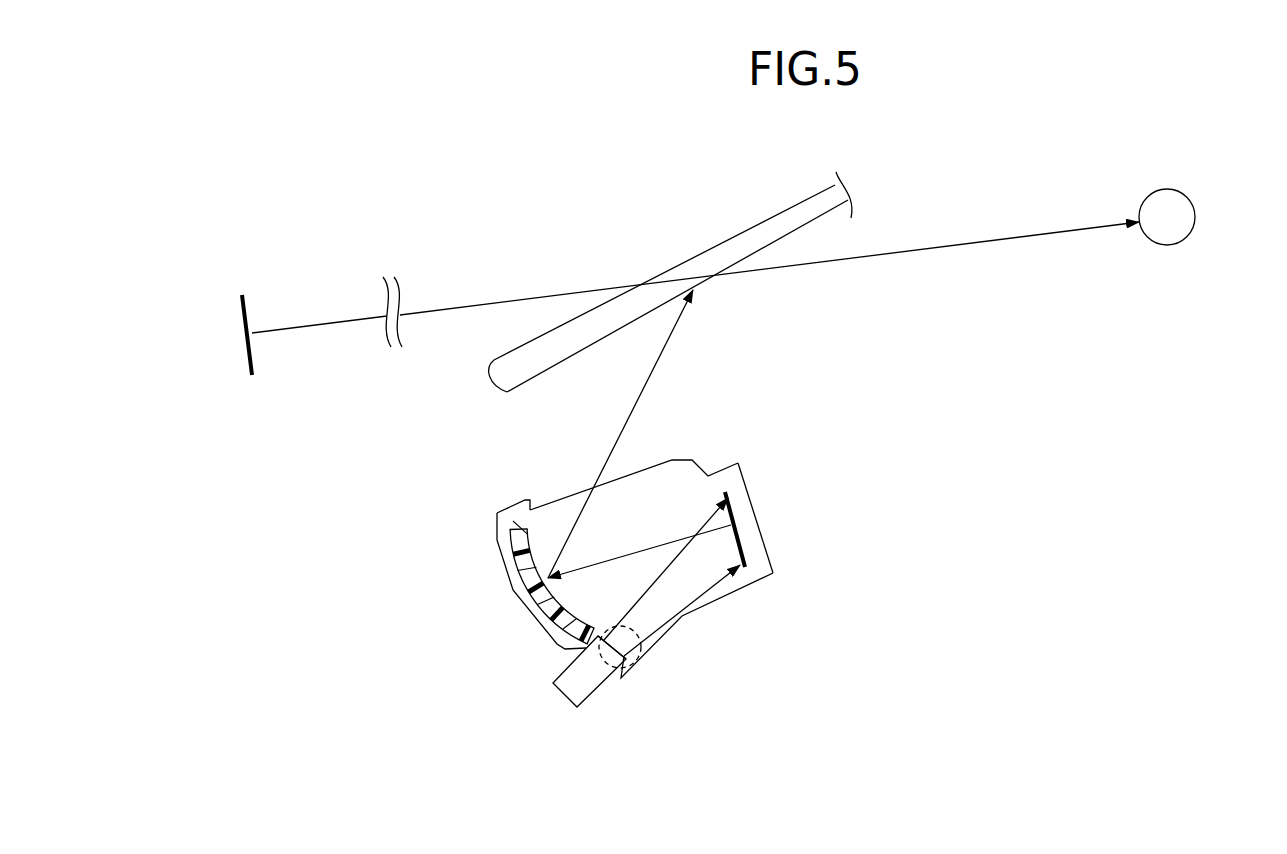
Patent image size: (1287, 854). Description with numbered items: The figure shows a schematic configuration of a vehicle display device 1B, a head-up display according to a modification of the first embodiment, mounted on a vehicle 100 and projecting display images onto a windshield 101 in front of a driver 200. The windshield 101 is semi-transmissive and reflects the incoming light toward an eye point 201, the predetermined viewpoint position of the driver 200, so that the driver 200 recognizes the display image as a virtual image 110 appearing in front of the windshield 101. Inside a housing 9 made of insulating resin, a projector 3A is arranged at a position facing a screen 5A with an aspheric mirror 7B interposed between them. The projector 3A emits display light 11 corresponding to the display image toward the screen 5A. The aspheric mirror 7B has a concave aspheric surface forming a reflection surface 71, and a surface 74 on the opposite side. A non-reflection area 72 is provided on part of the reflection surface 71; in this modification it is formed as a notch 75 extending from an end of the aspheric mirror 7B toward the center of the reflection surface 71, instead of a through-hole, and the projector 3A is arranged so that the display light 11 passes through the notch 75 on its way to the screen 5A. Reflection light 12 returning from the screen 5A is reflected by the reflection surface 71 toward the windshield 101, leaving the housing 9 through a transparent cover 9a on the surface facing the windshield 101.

The vehicle 100 is at (643, 173).
The windshield 101 is at (780, 187).
The virtual image 110 is at (249, 300).
The driver 200 is at (1183, 196).
The eye point 201 is at (1140, 203).
The vehicle display device 1B is at (790, 427).
The display light 11 is at (631, 531).
The reflection light 12 is at (617, 556).
The screen 5A is at (732, 512).
The housing 9 is at (686, 622).
The transparent cover 9a is at (572, 497).
The aspheric mirror 7B is at (507, 549).
The reflection surface 71 is at (530, 567).
The surface opposite to the reflection surface 74 is at (535, 610).
The projector 3A is at (564, 698).
The non-reflection area 72 is at (645, 660).
The notch 75 is at (615, 672).